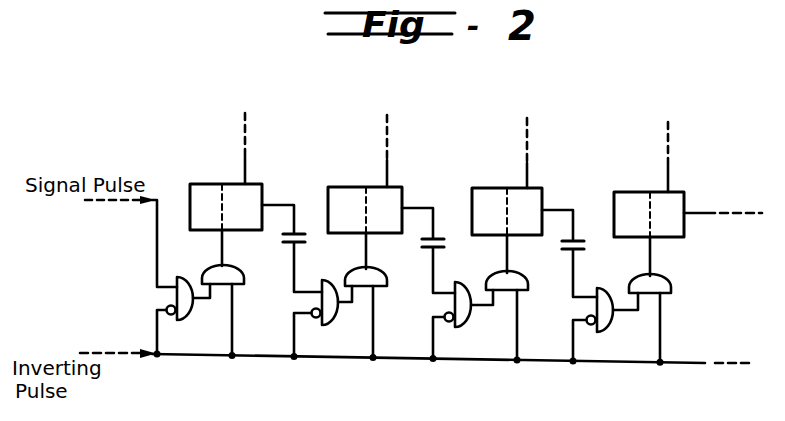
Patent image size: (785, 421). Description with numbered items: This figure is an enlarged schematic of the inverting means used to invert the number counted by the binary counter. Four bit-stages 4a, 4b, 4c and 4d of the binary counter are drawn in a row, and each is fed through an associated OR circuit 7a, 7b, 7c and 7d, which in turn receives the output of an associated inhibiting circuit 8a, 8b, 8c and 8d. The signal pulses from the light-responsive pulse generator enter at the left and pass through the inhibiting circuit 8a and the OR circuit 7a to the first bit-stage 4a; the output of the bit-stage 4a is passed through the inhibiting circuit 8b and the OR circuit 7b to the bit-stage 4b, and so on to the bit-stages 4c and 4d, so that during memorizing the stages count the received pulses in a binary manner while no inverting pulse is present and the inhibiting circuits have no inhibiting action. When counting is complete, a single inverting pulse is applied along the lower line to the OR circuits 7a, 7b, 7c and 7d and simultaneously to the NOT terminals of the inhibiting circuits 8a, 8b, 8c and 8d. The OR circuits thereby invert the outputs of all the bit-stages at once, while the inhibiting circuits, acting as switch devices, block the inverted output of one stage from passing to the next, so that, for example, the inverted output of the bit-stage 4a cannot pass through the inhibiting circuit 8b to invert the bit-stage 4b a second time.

The bit-stage 4a is at (221, 192).
The bit-stage 4b is at (365, 195).
The bit-stage 4c is at (506, 200).
The bit-stage 4d is at (649, 203).
The OR circuit 7a is at (247, 266).
The OR circuit 7b is at (391, 268).
The OR circuit 7c is at (532, 271).
The OR circuit 7d is at (668, 281).
The inhibiting circuit 8a is at (186, 318).
The inhibiting circuit 8b is at (331, 323).
The inhibiting circuit 8c is at (466, 325).
The inhibiting circuit 8d is at (606, 330).